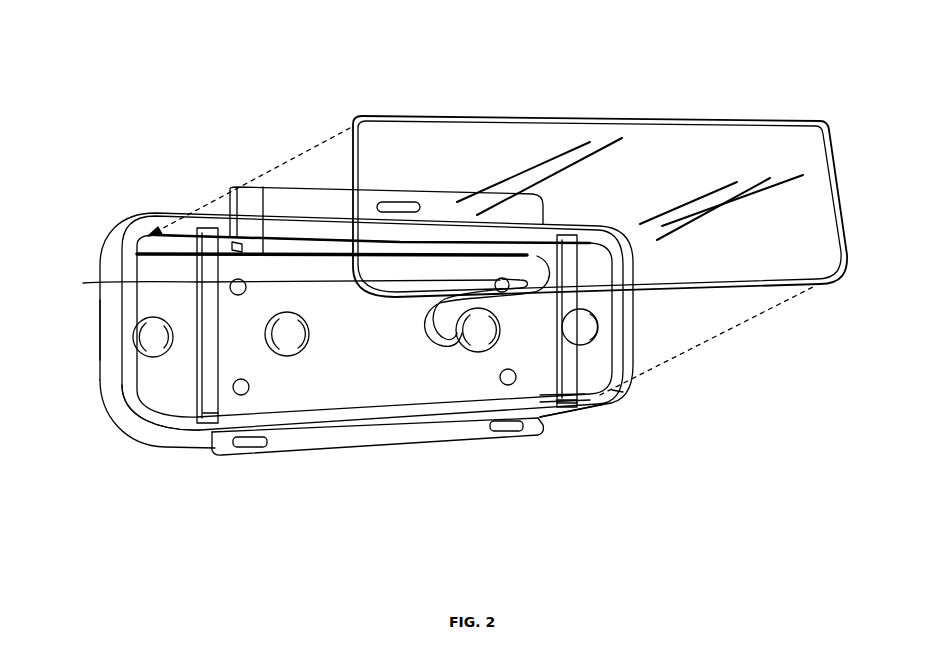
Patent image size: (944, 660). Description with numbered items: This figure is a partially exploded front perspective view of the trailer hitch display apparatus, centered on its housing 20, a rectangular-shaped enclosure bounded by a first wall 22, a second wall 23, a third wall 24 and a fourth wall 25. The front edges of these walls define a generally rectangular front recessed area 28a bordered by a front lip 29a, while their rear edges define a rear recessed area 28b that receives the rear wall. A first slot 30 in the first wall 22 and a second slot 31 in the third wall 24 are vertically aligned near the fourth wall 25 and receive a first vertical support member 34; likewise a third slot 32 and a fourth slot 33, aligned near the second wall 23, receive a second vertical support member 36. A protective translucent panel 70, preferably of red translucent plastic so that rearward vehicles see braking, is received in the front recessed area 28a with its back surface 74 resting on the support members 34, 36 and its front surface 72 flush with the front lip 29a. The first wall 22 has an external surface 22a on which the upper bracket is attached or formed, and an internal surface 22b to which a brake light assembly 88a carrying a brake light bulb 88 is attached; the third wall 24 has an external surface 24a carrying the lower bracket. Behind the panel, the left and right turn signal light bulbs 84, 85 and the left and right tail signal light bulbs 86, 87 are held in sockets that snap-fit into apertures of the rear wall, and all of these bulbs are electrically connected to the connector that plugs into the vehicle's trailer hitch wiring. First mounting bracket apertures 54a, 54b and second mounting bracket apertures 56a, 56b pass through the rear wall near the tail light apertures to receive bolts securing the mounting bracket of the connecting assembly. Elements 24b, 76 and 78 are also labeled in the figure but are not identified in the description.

The housing 20 is at (96, 434).
The first wall 22 is at (222, 232).
The external surface of first wall 22a is at (208, 230).
The internal surface of first wall 22b is at (217, 232).
The second wall 23 is at (617, 307).
The third wall 24 is at (180, 445).
The external surface of third wall 24a is at (197, 448).
The housing side wall 24b is at (197, 410).
The fourth wall 25 is at (100, 327).
The front recessed area 28a is at (625, 357).
The rear recessed area 28b is at (607, 397).
The front lip 29a is at (621, 392).
The first slot 30 is at (200, 230).
The second slot 31 is at (574, 412).
The third slot 32 is at (217, 452).
The fourth slot 33 is at (544, 228).
The first vertical support member 34 is at (83, 283).
The second vertical support member 36 is at (626, 258).
The first mounting bracket aperture 54a is at (237, 279).
The first mounting bracket aperture 54b is at (243, 395).
The second mounting bracket aperture 56a is at (508, 282).
The second mounting bracket aperture 56b is at (513, 384).
The protective translucent panel 70 is at (498, 120).
The front surface 72 is at (803, 208).
The back surface 74 is at (352, 150).
The mirror edge 76 is at (545, 117).
The mirror back 78 is at (787, 298).
The left turn signal light bulb 84 is at (135, 343).
The right turn signal light bulb 85 is at (627, 327).
The left tail signal light bulb 86 is at (293, 356).
The right tail signal light bulb 87 is at (478, 352).
The brake light bulb 88 is at (234, 243).
The brake light assembly 88a is at (265, 187).